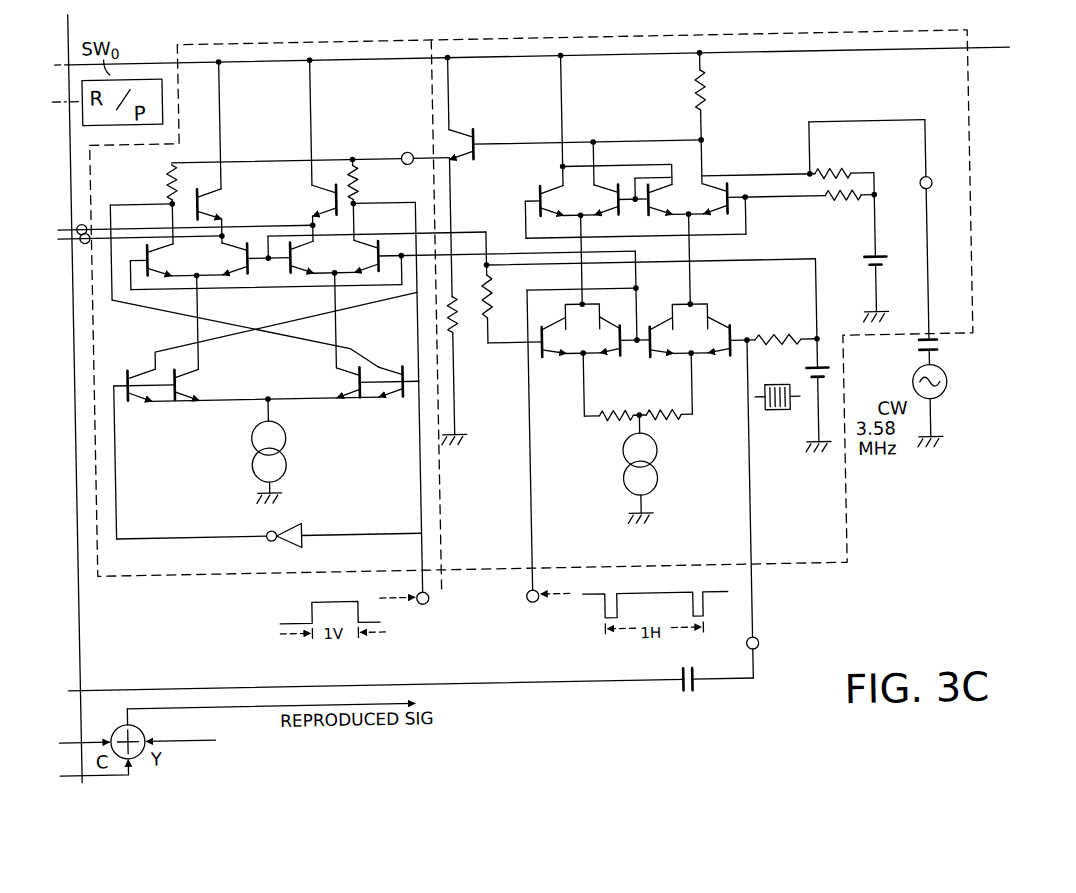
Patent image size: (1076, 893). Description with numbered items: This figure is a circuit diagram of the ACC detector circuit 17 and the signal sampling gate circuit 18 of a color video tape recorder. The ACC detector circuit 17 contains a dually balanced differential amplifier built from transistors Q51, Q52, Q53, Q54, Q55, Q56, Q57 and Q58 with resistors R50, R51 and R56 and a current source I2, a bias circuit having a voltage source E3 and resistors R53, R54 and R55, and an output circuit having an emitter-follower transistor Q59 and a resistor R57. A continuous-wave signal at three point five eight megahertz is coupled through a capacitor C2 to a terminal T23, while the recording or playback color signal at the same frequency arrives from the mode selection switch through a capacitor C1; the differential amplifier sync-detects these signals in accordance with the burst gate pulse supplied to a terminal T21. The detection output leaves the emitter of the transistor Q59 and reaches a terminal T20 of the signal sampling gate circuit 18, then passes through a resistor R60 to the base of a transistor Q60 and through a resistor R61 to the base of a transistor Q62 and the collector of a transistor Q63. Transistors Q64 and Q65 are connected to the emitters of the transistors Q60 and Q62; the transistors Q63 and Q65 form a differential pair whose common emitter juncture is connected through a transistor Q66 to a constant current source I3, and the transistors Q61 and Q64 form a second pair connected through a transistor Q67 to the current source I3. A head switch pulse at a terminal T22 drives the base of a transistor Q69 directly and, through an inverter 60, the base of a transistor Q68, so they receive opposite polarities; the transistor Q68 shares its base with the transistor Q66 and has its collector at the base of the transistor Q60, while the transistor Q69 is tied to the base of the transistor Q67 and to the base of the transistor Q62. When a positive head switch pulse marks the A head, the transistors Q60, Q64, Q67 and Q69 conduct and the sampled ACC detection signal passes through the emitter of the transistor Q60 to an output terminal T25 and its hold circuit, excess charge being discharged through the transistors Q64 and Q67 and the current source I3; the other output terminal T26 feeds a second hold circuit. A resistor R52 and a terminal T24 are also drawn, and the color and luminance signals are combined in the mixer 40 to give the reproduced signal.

The ACC detector circuit 17 is at (990, 44).
The signal sampling gate circuit 18 is at (185, 40).
The mixer 40 is at (136, 722).
The inverter 60 is at (267, 535).
The transistor Q51 is at (538, 188).
The transistor Q52 is at (614, 200).
The transistor Q53 is at (658, 203).
The transistor Q54 is at (720, 190).
The transistor Q55 is at (558, 355).
The transistor Q56 is at (608, 355).
The transistor Q57 is at (663, 355).
The transistor Q58 is at (718, 355).
The emitter-follower transistor Q59 is at (469, 132).
The transistor Q60 is at (336, 192).
The transistor Q61 is at (370, 238).
The transistor Q62 is at (215, 196).
The transistor Q63 is at (160, 265).
The transistor Q64 is at (316, 258).
The transistor Q65 is at (240, 276).
The transistor Q66 is at (192, 382).
The transistor Q67 is at (340, 374).
The transistor Q68 is at (138, 360).
The transistor Q69 is at (399, 369).
The resistor R50 is at (607, 427).
The resistor R51 is at (670, 427).
The resistor R52 is at (498, 260).
The resistor R53 is at (772, 330).
The resistor R54 is at (842, 206).
The resistor R55 is at (842, 174).
The resistor R56 is at (722, 81).
The resistor R57 is at (462, 318).
The resistor R60 is at (371, 180).
The resistor R61 is at (172, 170).
The input terminal T20 is at (404, 145).
The terminal T21 is at (535, 610).
The terminal T22 is at (430, 611).
The terminal T23 is at (943, 193).
The terminal T24 is at (768, 635).
The output terminal T25 is at (90, 216).
The output terminal T26 is at (82, 235).
The capacitor C1 is at (698, 689).
The capacitor C2 is at (942, 350).
The voltage source E3 is at (799, 365).
The current source I2 is at (651, 463).
The constant current source I3 is at (281, 445).